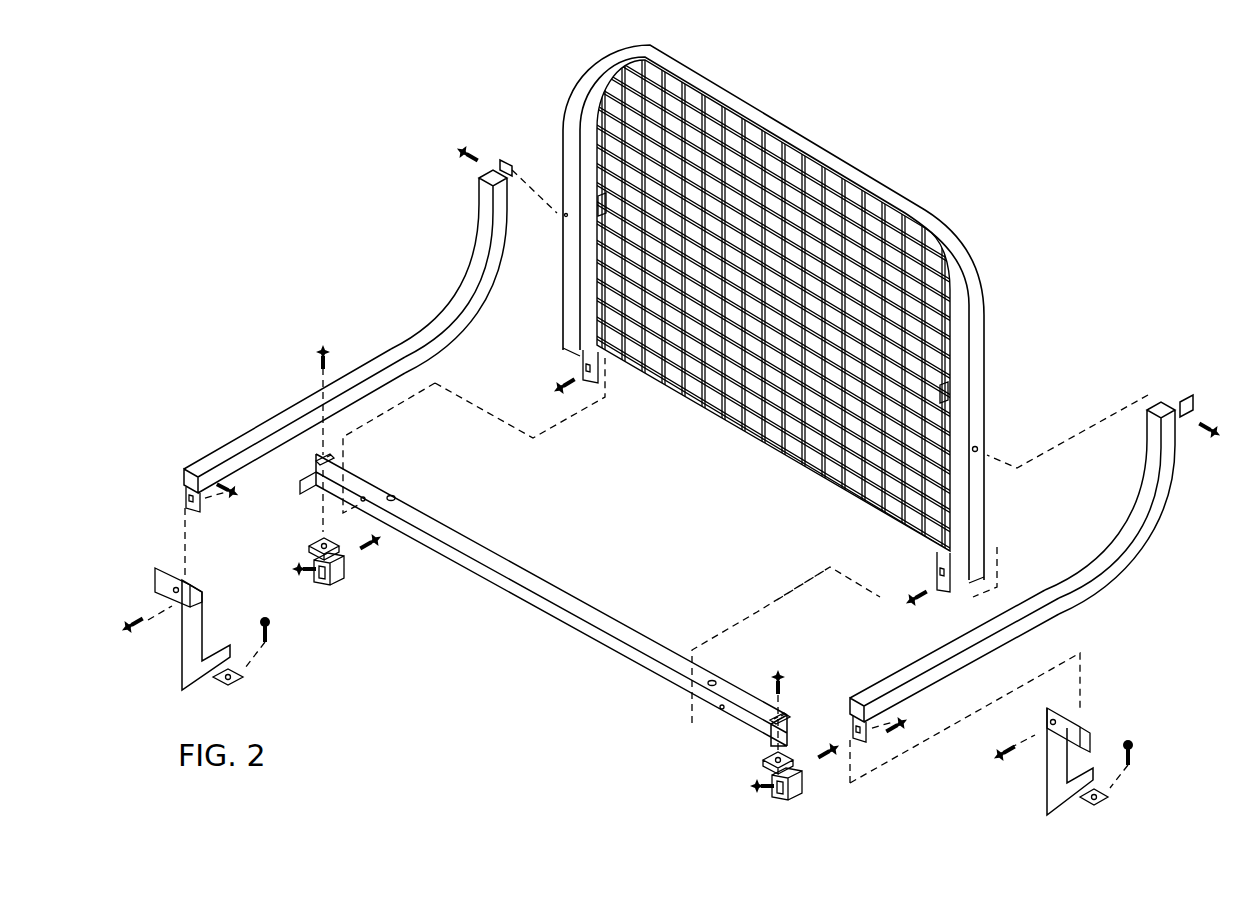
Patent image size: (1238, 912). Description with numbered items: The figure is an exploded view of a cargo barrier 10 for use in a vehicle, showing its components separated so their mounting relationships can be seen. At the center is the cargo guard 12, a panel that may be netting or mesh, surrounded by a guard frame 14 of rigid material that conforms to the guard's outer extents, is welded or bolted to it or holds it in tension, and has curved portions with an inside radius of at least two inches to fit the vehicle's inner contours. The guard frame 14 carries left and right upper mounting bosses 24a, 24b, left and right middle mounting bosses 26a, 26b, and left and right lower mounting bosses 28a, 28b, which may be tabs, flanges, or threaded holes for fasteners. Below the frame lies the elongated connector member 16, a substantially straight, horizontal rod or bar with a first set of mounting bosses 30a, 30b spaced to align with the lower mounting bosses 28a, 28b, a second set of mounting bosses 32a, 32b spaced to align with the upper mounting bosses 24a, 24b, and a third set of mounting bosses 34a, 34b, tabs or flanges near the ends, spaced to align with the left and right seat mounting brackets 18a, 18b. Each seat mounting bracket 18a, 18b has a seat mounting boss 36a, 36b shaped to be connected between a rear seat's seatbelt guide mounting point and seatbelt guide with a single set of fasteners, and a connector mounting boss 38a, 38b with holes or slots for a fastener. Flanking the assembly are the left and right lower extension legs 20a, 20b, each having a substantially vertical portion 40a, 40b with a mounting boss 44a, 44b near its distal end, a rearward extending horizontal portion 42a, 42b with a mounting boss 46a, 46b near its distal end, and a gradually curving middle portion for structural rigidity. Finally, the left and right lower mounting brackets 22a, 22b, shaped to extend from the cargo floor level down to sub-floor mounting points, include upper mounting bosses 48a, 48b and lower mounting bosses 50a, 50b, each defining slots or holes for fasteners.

The cargo barrier 10 is at (1047, 108).
The cargo guard 12 is at (820, 225).
The guard frame 14 is at (838, 150).
The elongated connector member 16 is at (540, 612).
The left seat mounting bracket 18a is at (358, 572).
The right seat mounting bracket 18b is at (830, 795).
The left lower extension leg 20a is at (432, 272).
The right lower extension leg 20b is at (1082, 518).
The left lower mounting bracket 22a is at (183, 645).
The right lower mounting bracket 22b is at (1047, 770).
The left upper mounting boss 24a is at (590, 210).
The right upper mounting boss 24b is at (945, 392).
The left middle mounting boss 26a is at (553, 222).
The right middle mounting boss 26b is at (978, 445).
The left lower mounting boss 28a is at (583, 372).
The right lower mounting boss 28b is at (930, 568).
The left mounting boss of first set 30a is at (364, 498).
The right mounting boss of first set 30b is at (730, 712).
The left mounting boss of second set 32a is at (395, 498).
The right mounting boss of second set 32b is at (712, 682).
The left mounting boss of third set 34a is at (318, 466).
The right mounting boss of third set 34b is at (787, 715).
The left seat mounting boss 36a is at (333, 582).
The right seat mounting boss 36b is at (798, 790).
The left connector mounting boss 38a is at (316, 540).
The right connector mounting boss 38b is at (762, 758).
The vertical portion of left extension leg 40a is at (478, 200).
The vertical portion of right extension leg 40b is at (1142, 438).
The horizontal portion of left extension leg 42a is at (390, 352).
The horizontal portion of right extension leg 42b is at (1090, 600).
The mounting boss of left vertical portion 44a is at (498, 162).
The mounting boss of right vertical portion 44b is at (1185, 402).
The mounting boss of left horizontal portion 46a is at (185, 498).
The mounting boss of right horizontal portion 46b is at (855, 724).
The upper mounting boss of left lower mounting bracket 48a is at (183, 585).
The upper mounting boss of right lower mounting bracket 48b is at (1090, 712).
The lower mounting boss of left lower mounting bracket 50a is at (245, 680).
The lower mounting boss of right lower mounting bracket 50b is at (1105, 797).